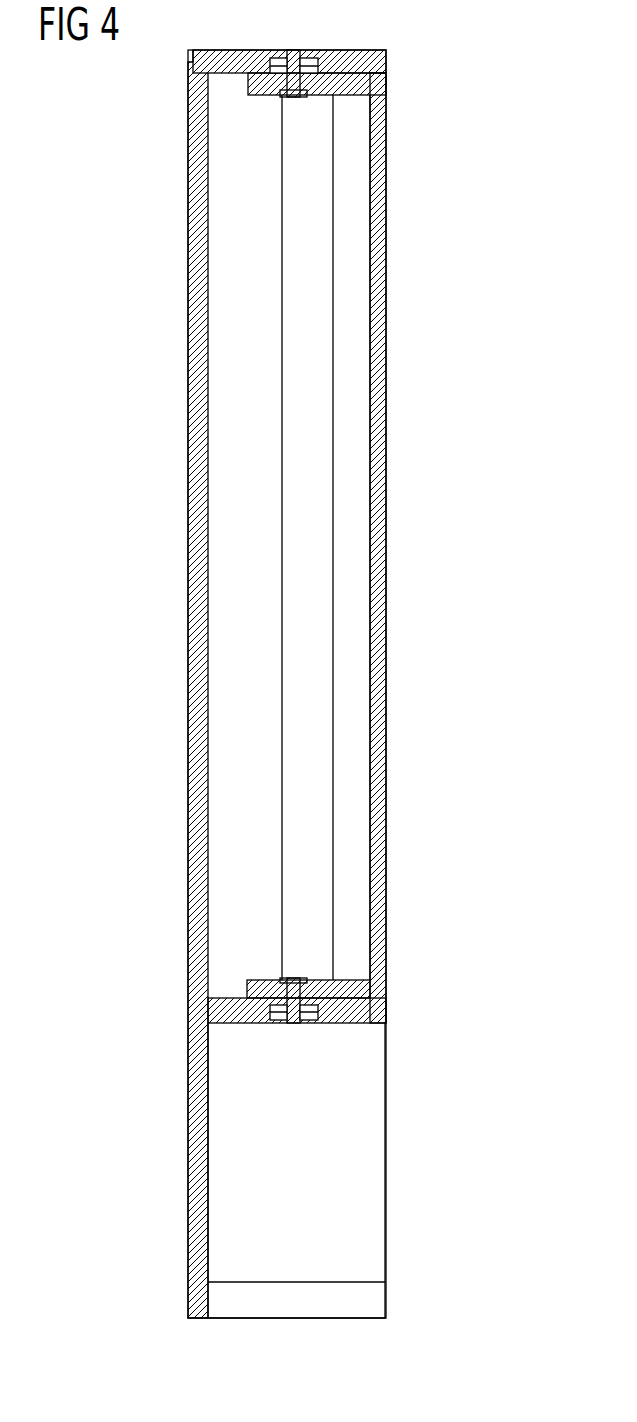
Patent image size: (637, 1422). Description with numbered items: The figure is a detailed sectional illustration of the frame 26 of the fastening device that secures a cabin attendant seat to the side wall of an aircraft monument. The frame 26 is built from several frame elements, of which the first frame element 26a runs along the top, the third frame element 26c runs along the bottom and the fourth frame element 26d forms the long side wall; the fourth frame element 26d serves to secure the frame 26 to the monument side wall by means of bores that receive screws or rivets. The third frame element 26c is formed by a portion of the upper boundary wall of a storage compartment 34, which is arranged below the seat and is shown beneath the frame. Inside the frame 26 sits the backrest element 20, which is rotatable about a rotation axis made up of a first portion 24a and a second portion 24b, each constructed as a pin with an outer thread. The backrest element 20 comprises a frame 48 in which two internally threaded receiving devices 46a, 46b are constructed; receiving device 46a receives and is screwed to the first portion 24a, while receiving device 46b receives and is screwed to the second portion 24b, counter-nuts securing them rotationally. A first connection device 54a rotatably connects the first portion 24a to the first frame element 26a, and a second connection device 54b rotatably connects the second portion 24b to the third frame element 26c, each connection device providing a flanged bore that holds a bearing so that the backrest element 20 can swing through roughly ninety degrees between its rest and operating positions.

The frame 26 is at (428, 103).
The first frame element 26a is at (380, 66).
The third frame element 26c is at (345, 1023).
The fourth frame element 26d is at (188, 553).
The frame of the backrest element 48 is at (386, 322).
The backrest element 20 is at (386, 580).
The receiving device 46a is at (269, 103).
The receiving device 46b is at (270, 958).
The first portion of the rotation axis 24a is at (299, 97).
The second portion of the rotation axis 24b is at (298, 978).
The first connection device 54a is at (262, 47).
The second connection device 54b is at (263, 1030).
The storage compartment 34 is at (368, 1152).